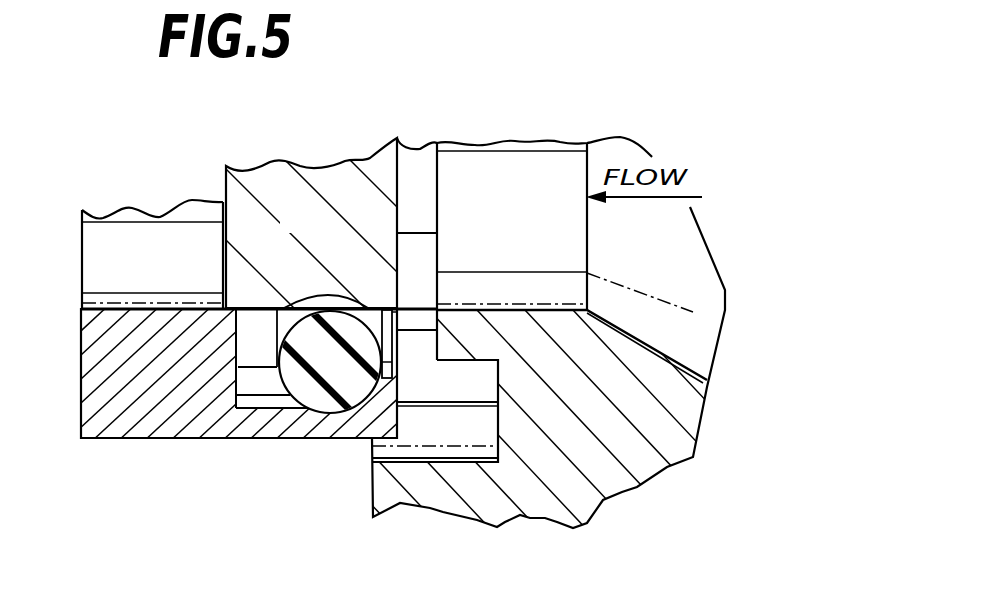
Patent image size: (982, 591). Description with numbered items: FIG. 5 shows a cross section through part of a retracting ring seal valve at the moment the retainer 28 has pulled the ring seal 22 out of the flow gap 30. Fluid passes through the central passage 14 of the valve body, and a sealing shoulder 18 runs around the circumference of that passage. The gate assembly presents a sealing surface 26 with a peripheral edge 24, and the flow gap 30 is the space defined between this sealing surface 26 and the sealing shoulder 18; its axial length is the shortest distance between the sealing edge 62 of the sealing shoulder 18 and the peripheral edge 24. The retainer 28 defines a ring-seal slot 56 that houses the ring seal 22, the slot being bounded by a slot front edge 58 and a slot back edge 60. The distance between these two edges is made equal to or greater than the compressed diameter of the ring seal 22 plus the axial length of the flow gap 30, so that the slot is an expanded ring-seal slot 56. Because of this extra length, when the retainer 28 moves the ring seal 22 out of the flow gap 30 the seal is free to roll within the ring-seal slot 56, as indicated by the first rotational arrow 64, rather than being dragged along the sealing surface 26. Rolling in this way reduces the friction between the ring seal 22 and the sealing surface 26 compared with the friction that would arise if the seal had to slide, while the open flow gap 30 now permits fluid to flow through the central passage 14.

The central passage 14 is at (172, 244).
The sealing shoulder 18 is at (622, 348).
The ring seal 22 is at (310, 410).
The peripheral edge 24 is at (386, 324).
The sealing surface 26 is at (326, 234).
The retainer 28 is at (167, 428).
The flow gap 30 is at (421, 213).
The ring-seal slot 56 is at (253, 352).
The slot front edge 58 is at (398, 422).
The slot back edge 60 is at (242, 376).
The sealing edge 62 is at (428, 350).
The first rotational arrow 64 is at (336, 297).